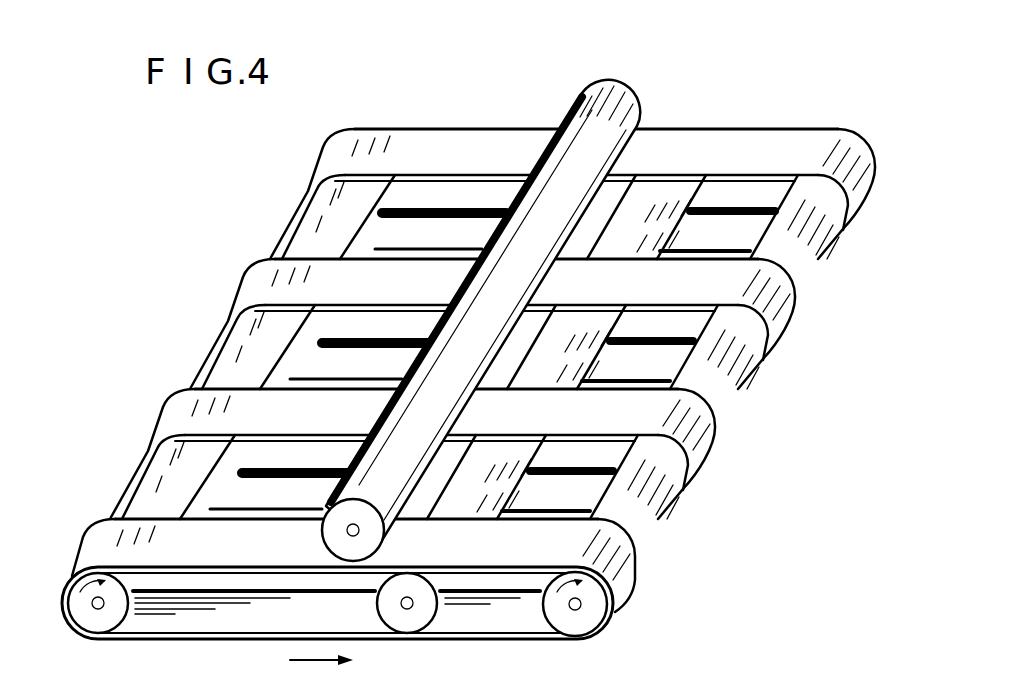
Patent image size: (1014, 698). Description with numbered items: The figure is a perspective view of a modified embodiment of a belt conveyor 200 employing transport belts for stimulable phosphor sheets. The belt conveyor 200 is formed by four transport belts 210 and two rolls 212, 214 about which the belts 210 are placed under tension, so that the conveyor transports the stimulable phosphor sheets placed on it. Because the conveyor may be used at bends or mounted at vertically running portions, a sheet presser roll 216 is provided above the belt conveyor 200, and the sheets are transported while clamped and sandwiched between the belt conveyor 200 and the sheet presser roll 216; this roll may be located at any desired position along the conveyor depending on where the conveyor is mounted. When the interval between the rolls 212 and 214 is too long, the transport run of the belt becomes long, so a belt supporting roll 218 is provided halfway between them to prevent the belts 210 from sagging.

The belt conveyor 200 is at (742, 88).
The transport belt 210 is at (845, 226).
The roll 212 is at (97, 623).
The roll 214 is at (588, 618).
The sheet presser roll 216 is at (335, 540).
The belt supporting roll 218 is at (417, 624).